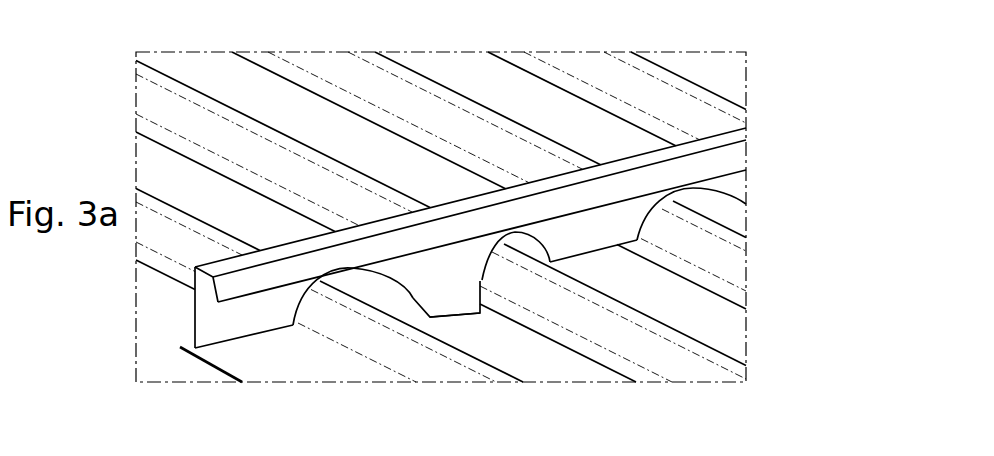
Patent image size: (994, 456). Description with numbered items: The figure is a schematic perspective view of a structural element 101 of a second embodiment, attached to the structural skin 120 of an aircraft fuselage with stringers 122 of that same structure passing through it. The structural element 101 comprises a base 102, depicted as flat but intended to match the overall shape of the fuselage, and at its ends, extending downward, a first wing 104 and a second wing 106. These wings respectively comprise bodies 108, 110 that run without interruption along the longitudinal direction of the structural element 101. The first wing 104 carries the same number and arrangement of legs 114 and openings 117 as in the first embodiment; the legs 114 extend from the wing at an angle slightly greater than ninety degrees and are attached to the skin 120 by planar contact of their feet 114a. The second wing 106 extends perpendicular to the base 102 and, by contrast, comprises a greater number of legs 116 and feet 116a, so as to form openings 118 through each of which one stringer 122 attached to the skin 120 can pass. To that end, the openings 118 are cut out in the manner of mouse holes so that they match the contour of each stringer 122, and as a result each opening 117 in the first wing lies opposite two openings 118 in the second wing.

The structural element 101 is at (787, 131).
The base 102 is at (443, 210).
The first wing 104 is at (420, 313).
The second wing 106 is at (185, 323).
The body 108 is at (625, 183).
The body 110 is at (200, 285).
The leg 114 is at (397, 213).
The foot 114a is at (462, 318).
The leg 116 is at (208, 335).
The foot 116a is at (176, 352).
The opening 117 is at (300, 336).
The opening 118 is at (343, 268).
The skin 120 is at (250, 355).
The stringer 122 is at (568, 52).